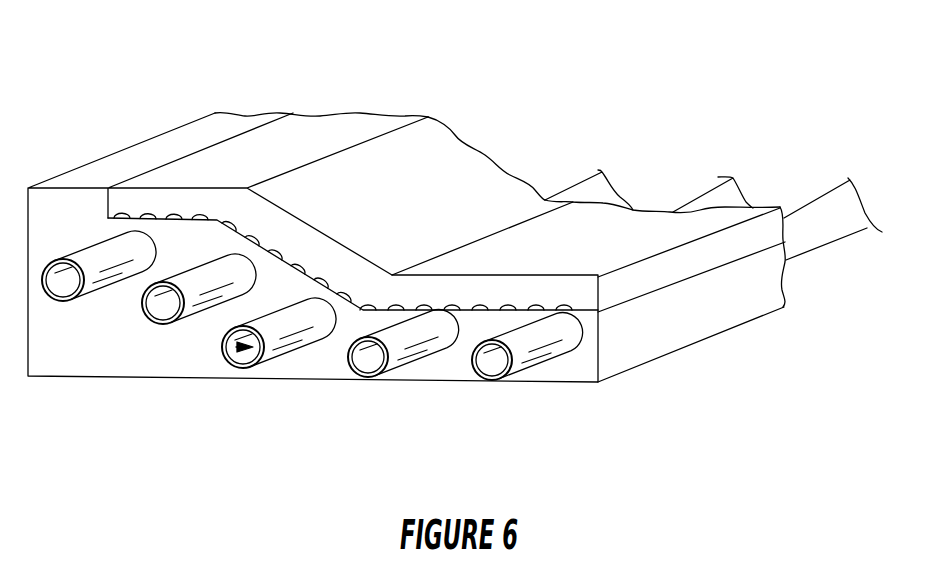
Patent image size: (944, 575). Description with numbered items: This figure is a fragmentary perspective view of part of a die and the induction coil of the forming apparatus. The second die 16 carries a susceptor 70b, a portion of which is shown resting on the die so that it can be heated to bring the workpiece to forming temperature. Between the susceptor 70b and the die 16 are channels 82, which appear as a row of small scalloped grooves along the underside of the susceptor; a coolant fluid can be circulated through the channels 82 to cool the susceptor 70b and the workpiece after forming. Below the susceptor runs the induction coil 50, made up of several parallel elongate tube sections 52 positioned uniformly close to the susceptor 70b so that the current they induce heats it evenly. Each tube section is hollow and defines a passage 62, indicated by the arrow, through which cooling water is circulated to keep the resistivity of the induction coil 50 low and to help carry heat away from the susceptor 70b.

The susceptor 70b is at (350, 128).
The second die 16 is at (708, 323).
The channels 82 is at (343, 306).
The induction coil 50 is at (312, 368).
The elongate tube sections 52 is at (233, 368).
The passage 62 is at (236, 347).